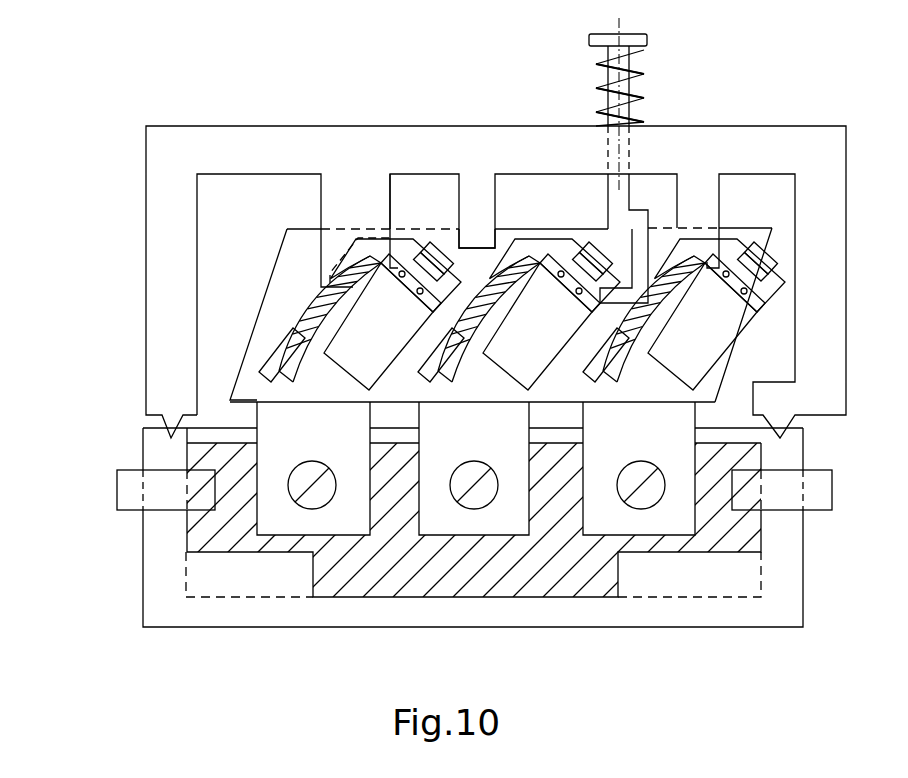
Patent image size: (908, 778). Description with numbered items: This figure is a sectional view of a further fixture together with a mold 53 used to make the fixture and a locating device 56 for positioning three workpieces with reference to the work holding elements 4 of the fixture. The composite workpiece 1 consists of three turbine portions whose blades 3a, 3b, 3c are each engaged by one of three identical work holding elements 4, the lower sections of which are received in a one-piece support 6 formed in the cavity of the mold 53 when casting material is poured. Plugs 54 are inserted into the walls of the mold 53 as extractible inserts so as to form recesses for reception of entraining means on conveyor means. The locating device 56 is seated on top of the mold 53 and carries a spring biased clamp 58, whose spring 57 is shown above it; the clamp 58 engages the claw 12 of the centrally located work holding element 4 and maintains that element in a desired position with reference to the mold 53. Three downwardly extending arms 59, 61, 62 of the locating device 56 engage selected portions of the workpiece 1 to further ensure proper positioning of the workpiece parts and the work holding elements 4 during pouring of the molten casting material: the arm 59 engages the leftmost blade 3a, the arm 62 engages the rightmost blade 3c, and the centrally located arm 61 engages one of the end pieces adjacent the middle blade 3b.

The workpiece 1 is at (281, 247).
The blade 3a is at (320, 313).
The blade 3b is at (473, 327).
The blade 3c is at (641, 332).
The work holding element 4 is at (652, 444).
The support 6 is at (762, 532).
The claw 12 is at (532, 247).
The mold 53 is at (647, 612).
The plug 54 is at (135, 490).
The locating device 56 is at (803, 120).
The spring 57 is at (603, 106).
The spring biased clamp 58 is at (641, 216).
The arm 59 is at (333, 248).
The arm 61 is at (479, 246).
The arm 62 is at (706, 248).